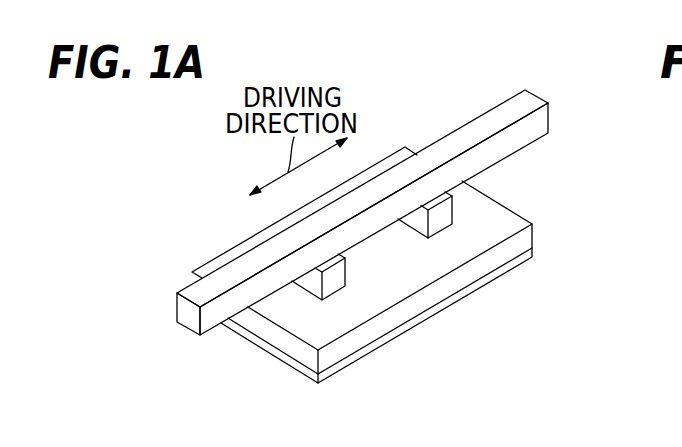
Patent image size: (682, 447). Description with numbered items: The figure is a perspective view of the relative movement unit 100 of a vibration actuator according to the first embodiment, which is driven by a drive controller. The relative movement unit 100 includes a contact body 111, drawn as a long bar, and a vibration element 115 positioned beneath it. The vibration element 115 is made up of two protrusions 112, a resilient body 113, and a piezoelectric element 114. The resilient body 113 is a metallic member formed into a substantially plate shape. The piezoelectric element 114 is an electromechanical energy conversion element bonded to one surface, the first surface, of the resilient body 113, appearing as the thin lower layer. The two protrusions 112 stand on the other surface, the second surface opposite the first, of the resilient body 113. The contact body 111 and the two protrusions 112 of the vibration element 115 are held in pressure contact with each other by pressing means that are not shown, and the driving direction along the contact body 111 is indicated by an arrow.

The relative movement unit 100 is at (391, 106).
The contact body 111 is at (236, 272).
The protrusions 112 is at (438, 221).
The resilient body 113 is at (532, 238).
The piezoelectric element 114 is at (512, 261).
The vibration element 115 is at (617, 170).